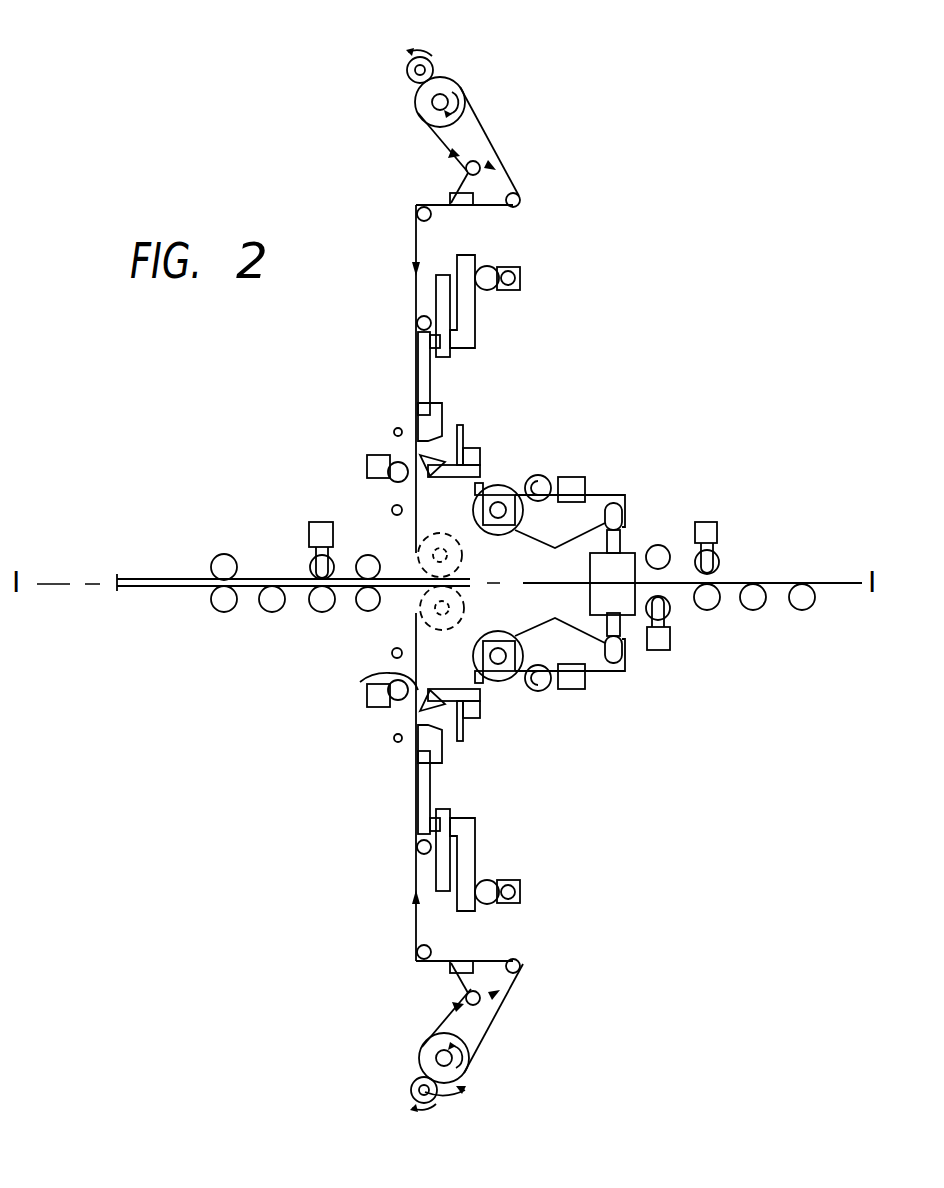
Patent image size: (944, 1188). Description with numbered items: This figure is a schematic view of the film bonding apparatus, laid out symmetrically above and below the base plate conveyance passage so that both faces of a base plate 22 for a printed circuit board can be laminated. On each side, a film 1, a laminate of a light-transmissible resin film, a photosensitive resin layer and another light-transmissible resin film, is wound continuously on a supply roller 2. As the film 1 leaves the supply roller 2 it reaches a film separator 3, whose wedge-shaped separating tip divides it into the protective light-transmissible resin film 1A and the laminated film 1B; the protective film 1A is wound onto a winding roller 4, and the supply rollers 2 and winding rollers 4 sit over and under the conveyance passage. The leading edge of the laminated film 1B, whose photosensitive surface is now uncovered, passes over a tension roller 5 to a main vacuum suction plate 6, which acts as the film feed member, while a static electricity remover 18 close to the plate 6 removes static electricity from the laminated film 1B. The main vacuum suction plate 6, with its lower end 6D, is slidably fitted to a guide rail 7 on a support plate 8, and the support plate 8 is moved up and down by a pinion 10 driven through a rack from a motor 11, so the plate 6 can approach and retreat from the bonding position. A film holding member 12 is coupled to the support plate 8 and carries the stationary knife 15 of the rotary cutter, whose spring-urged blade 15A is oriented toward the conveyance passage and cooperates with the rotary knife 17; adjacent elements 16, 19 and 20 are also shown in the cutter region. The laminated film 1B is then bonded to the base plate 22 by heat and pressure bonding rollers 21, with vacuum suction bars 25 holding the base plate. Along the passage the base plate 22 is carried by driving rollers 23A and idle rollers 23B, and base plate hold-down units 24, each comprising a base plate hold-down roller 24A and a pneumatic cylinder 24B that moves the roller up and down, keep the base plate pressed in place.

The film 1 is at (463, 95).
The light-transmissible resin film 1A is at (412, 78).
The laminated film 1B is at (416, 228).
The supply roller 2 is at (447, 98).
The film separator 3 is at (452, 196).
The winding roller 4 is at (410, 62).
The tension roller 5 is at (417, 212).
The main vacuum suction plate 6 is at (418, 357).
The guide plate end 6D is at (442, 415).
The guide rail 7 is at (446, 360).
The support plate 8 is at (470, 258).
The pinion 10 is at (484, 290).
The motor 11 is at (520, 278).
The film holding member 12 is at (420, 452).
The stationary knife 15 is at (420, 464).
The blade 15A is at (370, 688).
The cutter 16 is at (367, 465).
The rotary knife 17 is at (390, 478).
The static electricity remover 18 is at (417, 322).
The sensor 19 is at (396, 428).
The sensor 20 is at (392, 510).
The heat and pressure bonding roller 21 is at (500, 486).
The base plate 22 is at (143, 590).
The driving roller 23A is at (224, 612).
The idle roller 23B is at (218, 562).
The base plate hold-down unit 24 is at (226, 526).
The base plate hold-down roller 24A is at (318, 560).
The pneumatic cylinder 24B is at (318, 556).
The vacuum suction bar 25 is at (481, 483).